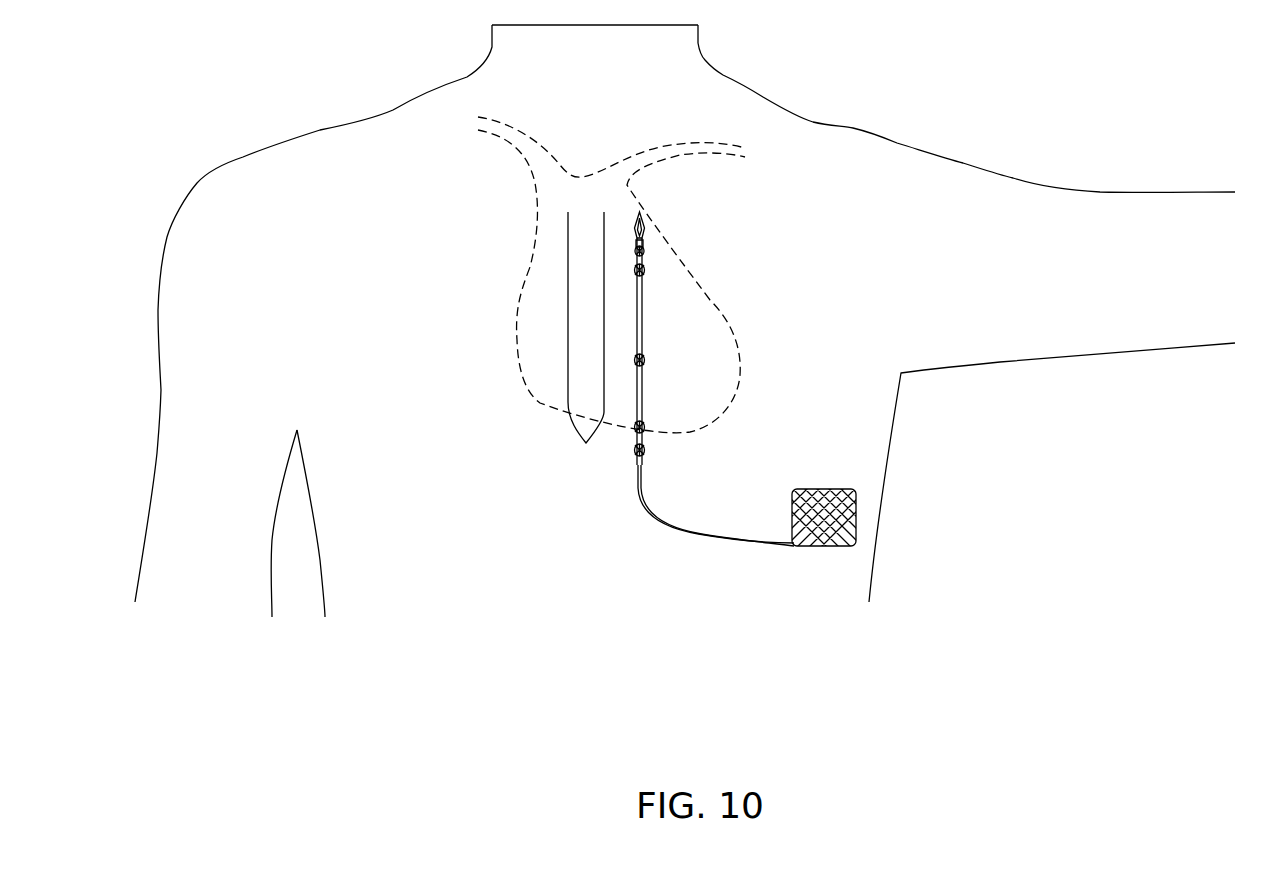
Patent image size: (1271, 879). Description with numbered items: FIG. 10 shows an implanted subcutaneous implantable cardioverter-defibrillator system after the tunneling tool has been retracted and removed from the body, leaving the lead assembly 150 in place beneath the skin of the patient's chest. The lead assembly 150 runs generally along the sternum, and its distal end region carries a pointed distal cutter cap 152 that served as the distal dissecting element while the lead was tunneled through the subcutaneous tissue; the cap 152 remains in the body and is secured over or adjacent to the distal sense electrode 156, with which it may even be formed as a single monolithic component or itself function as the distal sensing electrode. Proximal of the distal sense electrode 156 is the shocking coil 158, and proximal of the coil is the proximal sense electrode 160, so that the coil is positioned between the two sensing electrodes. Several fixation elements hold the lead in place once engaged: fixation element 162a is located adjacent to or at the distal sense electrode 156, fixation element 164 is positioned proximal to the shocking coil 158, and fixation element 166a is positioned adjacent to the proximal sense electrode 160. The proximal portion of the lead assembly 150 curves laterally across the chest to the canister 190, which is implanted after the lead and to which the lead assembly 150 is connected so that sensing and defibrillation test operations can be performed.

The lead assembly 150 is at (725, 458).
The distal cutter cap 152 is at (647, 228).
The distal sense electrode 156 is at (645, 240).
The shocking coil 158 is at (647, 352).
The proximal sense electrode 160 is at (647, 473).
The fixation element 162a is at (643, 252).
The fixation element 164 is at (640, 427).
The fixation element 166a is at (652, 450).
The canister 190 is at (856, 518).